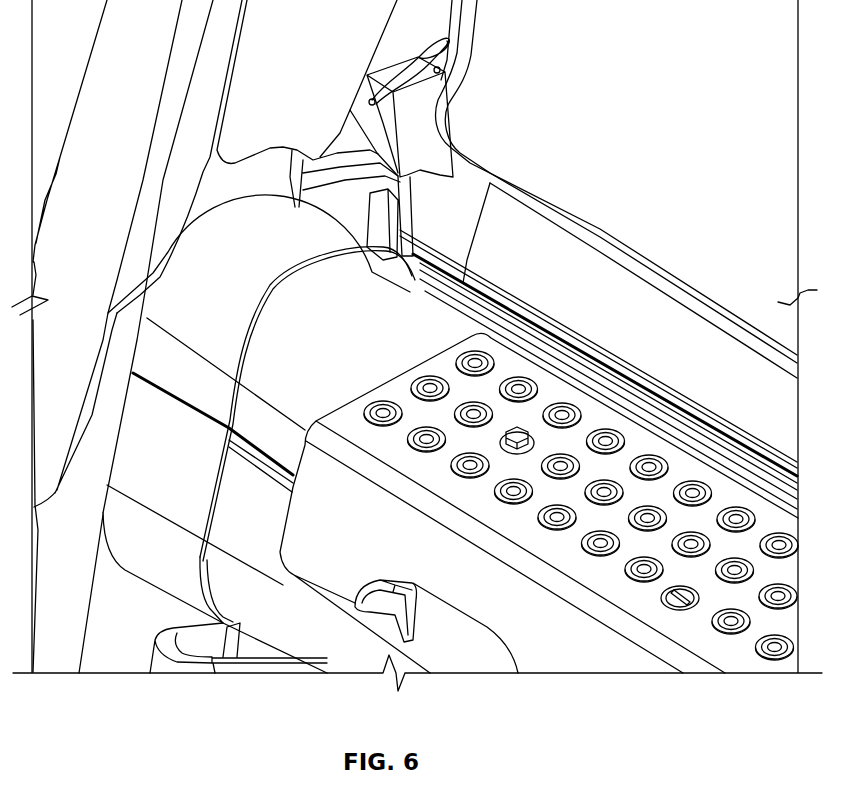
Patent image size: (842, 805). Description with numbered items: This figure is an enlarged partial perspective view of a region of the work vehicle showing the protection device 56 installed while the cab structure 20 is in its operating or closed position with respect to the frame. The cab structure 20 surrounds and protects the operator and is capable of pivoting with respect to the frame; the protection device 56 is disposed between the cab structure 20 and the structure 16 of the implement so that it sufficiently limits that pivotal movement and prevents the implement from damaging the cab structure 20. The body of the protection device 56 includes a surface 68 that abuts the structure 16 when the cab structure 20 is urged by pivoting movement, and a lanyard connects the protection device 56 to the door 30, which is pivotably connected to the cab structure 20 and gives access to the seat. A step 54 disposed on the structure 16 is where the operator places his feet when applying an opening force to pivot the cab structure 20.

The structure 16 is at (218, 309).
The cab structure 20 is at (711, 379).
The door 30 is at (677, 243).
The step 54 is at (495, 595).
The protection device 56 is at (453, 177).
The surface 68 is at (377, 153).